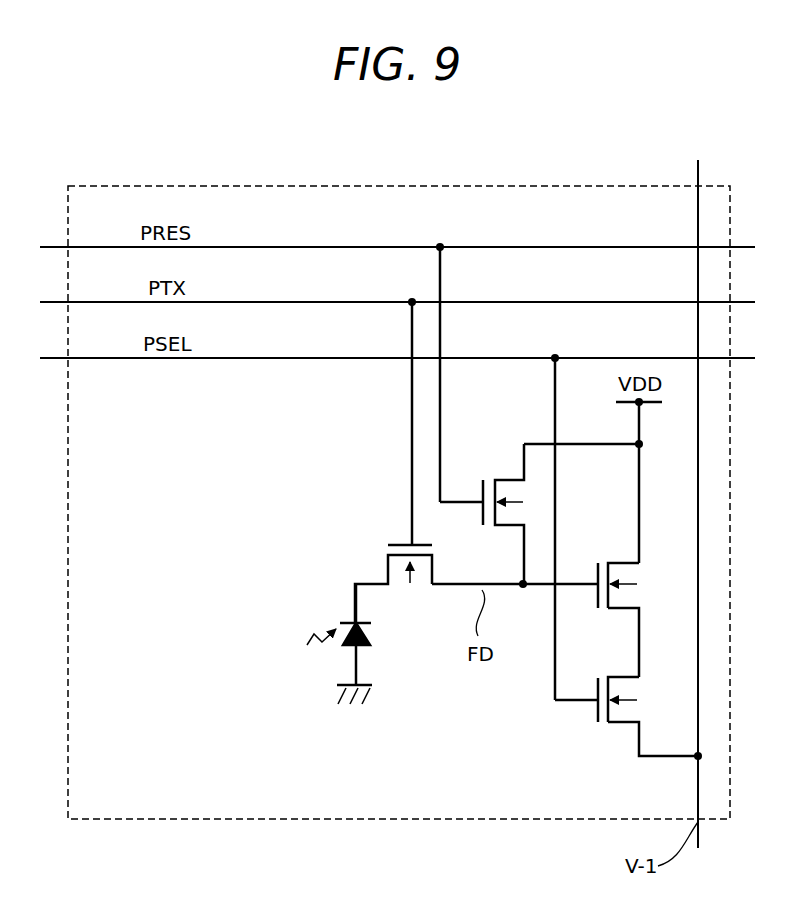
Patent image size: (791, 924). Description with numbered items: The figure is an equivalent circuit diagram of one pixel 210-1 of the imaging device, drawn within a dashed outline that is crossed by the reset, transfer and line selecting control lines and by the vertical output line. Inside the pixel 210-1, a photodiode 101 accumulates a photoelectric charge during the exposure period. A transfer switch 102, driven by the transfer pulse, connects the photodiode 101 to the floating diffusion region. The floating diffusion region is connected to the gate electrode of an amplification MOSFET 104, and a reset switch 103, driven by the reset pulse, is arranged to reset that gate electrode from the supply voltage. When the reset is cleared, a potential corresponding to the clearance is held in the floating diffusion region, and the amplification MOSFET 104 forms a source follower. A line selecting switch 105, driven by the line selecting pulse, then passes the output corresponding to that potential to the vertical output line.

The photodiode 101 is at (353, 648).
The transfer switch 102 is at (400, 543).
The reset switch 103 is at (490, 478).
The amplification MOSFET 104 is at (601, 560).
The line selecting switch 105 is at (603, 724).
The pixel 210-1 is at (368, 820).